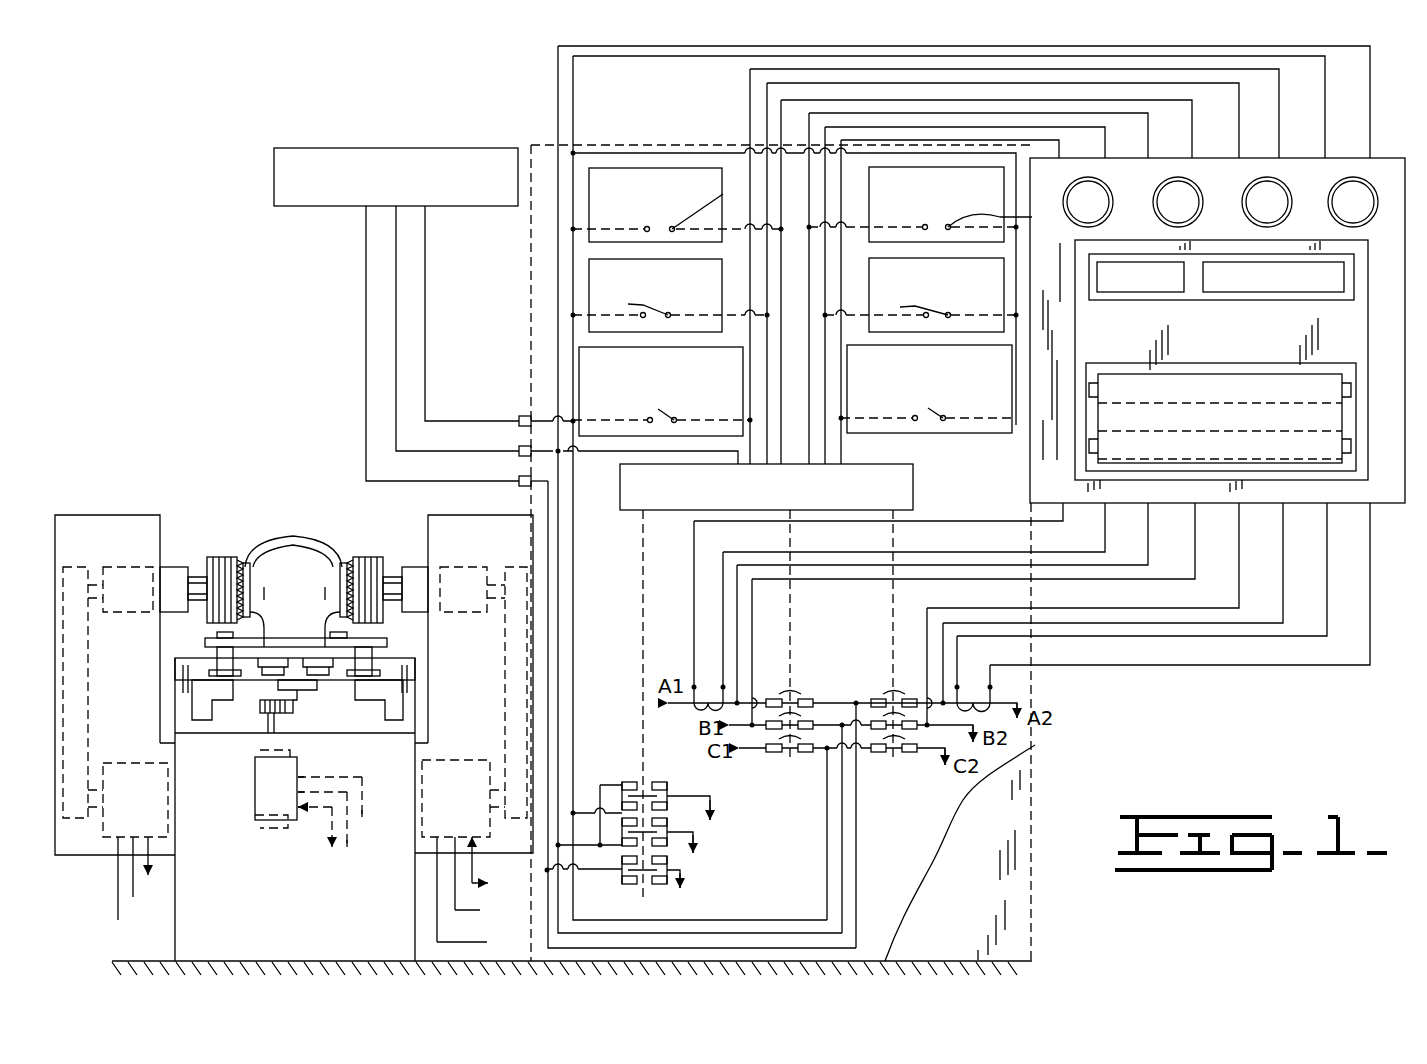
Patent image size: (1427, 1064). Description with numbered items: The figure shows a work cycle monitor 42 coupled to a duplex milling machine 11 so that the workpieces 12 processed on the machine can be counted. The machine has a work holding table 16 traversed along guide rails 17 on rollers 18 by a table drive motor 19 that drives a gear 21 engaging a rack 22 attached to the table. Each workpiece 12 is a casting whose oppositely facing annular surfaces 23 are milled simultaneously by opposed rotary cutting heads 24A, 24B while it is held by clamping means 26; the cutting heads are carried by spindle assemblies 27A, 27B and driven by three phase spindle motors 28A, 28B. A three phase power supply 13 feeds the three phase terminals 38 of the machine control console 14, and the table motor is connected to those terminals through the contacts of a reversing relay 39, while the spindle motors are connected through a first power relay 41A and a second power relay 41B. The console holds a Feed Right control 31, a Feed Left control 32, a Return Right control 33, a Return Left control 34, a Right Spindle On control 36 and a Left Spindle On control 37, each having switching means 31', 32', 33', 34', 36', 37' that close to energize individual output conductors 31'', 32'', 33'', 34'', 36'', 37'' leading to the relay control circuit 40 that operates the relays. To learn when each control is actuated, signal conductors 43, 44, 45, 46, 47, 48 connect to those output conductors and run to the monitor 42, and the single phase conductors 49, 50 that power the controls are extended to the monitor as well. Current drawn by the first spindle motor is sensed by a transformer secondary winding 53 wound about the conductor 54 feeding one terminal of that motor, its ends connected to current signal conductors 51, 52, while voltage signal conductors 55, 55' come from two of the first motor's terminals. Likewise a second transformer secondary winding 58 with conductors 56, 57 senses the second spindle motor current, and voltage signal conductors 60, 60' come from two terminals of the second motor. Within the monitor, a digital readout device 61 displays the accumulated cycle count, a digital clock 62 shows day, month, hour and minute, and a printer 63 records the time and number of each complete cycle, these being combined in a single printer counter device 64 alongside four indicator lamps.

The duplex milling machine 11 is at (292, 500).
The workpiece 12 is at (310, 612).
The power supply 13 is at (430, 147).
The machine control console 14 is at (968, 905).
The work holding table 16 is at (407, 662).
The guide rails 17 is at (375, 708).
The rollers 18 is at (385, 690).
The table drive motor 19 is at (262, 785).
The gear 21 is at (263, 707).
The rack 22 is at (297, 703).
The annular surfaces 23 is at (293, 537).
The rotary cutting head 24A is at (228, 562).
The rotary cutting head 24B is at (364, 562).
The clamping means 26 is at (205, 644).
The spindle assembly 27A is at (133, 567).
The spindle assembly 27B is at (480, 567).
The spindle motor 28A is at (157, 818).
The spindle motor 28B is at (432, 823).
The Feed Right control 31 is at (676, 175).
The switch 31' is at (702, 206).
The output conductor 31'' is at (799, 213).
The Feed Left control 32 is at (938, 204).
The switch 32' is at (996, 217).
The output conductor 32'' is at (858, 216).
The Return Right control 33 is at (669, 284).
The switch 33' is at (634, 304).
The output conductor 33'' is at (741, 345).
The Return Left control 34 is at (920, 285).
The switch 34' is at (912, 304).
The output conductor 34'' is at (858, 345).
The Right Spindle On control 36 is at (625, 390).
The switch 36' is at (588, 402).
The output conductor 36'' is at (671, 455).
The Left Spindle On control 37 is at (932, 406).
The switch 37' is at (939, 445).
The output conductor 37'' is at (877, 441).
The three phase terminals 38 is at (492, 447).
The reversing relay 39 is at (633, 777).
The circuit 40 is at (897, 504).
The first power relay 41A is at (800, 758).
The second power relay 41B is at (903, 758).
The work cycle monitor 42 is at (1257, 507).
The signal conductor 43 is at (1193, 143).
The signal conductor 44 is at (1240, 102).
The signal conductor 45 is at (1280, 97).
The signal conductor 46 is at (1148, 118).
The signal conductor 47 is at (1100, 157).
The signal conductor 48 is at (1058, 137).
The power conductor 49 is at (1370, 150).
The power conductor 50 is at (1326, 148).
The current signal conductor 51 is at (983, 521).
The current signal conductor 52 is at (1088, 550).
The transformer secondary winding 53 is at (708, 700).
The conductor 54 is at (687, 710).
The voltage signal conductor 55 is at (943, 603).
The voltage signal conductor 55' is at (973, 614).
The current signal conductor 56 is at (1282, 644).
The current signal conductor 57 is at (1328, 668).
The transformer secondary winding 58 is at (995, 680).
The voltage signal conductor 60 is at (1113, 603).
The voltage signal conductor 60' is at (1083, 614).
The digital readout device 61 is at (1093, 282).
The digital clock 62 is at (1344, 278).
The printer 63 is at (1245, 366).
The printer counter device 64 is at (1105, 486).